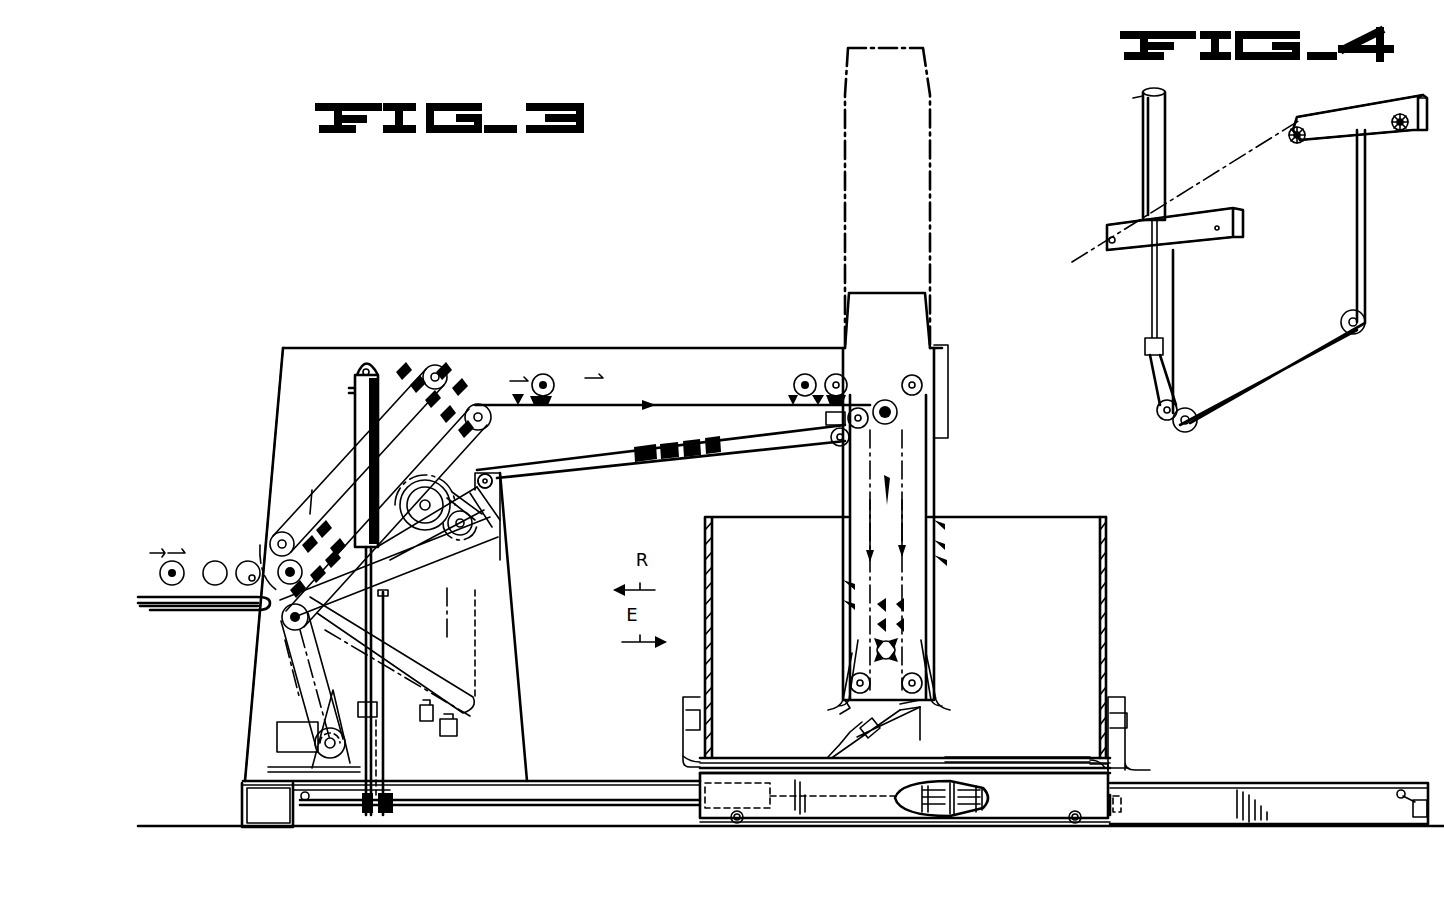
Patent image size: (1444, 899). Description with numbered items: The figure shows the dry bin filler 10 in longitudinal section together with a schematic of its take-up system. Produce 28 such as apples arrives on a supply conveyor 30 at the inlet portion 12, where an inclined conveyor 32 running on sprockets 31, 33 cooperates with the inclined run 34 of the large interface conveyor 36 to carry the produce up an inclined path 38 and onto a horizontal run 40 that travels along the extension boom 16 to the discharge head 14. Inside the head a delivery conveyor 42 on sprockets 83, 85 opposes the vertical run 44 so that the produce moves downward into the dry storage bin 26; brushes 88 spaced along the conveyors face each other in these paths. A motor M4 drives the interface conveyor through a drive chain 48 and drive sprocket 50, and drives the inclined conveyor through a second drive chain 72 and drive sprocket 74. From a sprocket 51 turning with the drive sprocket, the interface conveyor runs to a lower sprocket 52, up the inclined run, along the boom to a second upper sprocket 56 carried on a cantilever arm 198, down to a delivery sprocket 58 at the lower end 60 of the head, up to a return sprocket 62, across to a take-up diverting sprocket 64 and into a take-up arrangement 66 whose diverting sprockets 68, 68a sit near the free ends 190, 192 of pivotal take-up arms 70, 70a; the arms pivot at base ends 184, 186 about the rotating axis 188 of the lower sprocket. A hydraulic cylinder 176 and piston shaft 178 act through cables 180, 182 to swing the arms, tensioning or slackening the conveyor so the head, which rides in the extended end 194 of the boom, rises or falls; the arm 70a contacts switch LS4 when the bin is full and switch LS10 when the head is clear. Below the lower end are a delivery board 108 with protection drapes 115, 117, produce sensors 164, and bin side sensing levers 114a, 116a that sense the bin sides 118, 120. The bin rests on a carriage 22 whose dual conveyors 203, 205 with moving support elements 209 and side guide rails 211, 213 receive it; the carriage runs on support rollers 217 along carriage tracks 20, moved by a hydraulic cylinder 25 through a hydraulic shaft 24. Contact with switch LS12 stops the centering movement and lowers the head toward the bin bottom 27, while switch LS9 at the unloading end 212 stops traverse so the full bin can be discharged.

In FIG. 3, the dry bin filler 10 is at (680, 237).
In FIG. 3, the inlet portion 12 is at (282, 403).
In FIG. 3, the discharge head 14 is at (845, 128).
In FIG. 3, the extension boom 16 is at (684, 350).
In FIG. 3, the carriage tracks 20 is at (1268, 788).
In FIG. 3, the carriage 22 is at (1133, 701).
In FIG. 3, the hydraulic shaft 24 is at (992, 798).
In FIG. 3, the hydraulic cylinder 25 is at (553, 780).
In FIG. 3, the dry storage bin 26 is at (1110, 581).
In FIG. 3, the bottom of the bin 27 is at (993, 760).
In FIG. 3, the produce 28 is at (862, 410).
In FIG. 3, the supply conveyor 30 is at (138, 603).
In FIG. 3, the sprocket 31 is at (306, 510).
In FIG. 3, the inclined conveyor 32 is at (343, 450).
In FIG. 3, the sprocket 33 is at (455, 372).
In FIG. 3, the inclined run 34 is at (462, 445).
In FIG. 3, the interface conveyor 36 is at (598, 396).
In FIG. 3, the inclined path 38 is at (478, 398).
In FIG. 3, the horizontal run 40 is at (688, 404).
In FIG. 3, the delivery conveyor 42 is at (938, 487).
In FIG. 3, the vertical run 44 is at (868, 507).
In FIG. 3, the drive chain 48 is at (432, 576).
In FIG. 3, the drive sprocket 50 is at (430, 530).
In FIG. 3, the sprocket 51 is at (498, 507).
In FIG. 3, the lower sprocket 52 is at (335, 617).
In FIG. 4, the lower sprocket 52 is at (1290, 132).
In FIG. 3, the second upper sprocket 56 is at (855, 458).
In FIG. 3, the delivery sprocket 58 is at (850, 655).
In FIG. 3, the lower end of the discharge head 60 is at (845, 700).
In FIG. 3, the return sprocket 62 is at (825, 445).
In FIG. 3, the take-up diverting sprocket 64 is at (500, 487).
In FIG. 3, the take-up arrangement 66 is at (498, 537).
In FIG. 4, the take-up arrangement 66 is at (1337, 99).
In FIG. 3, the diverting sprocket 68 is at (488, 520).
In FIG. 4, the diverting sprocket 68 is at (1400, 132).
In FIG. 4, the companion diverting sprocket 68a is at (1245, 212).
In FIG. 3, the take-up arm 70 is at (445, 588).
In FIG. 4, the take-up arm 70 is at (1335, 135).
In FIG. 4, the take-up arm 70a is at (1215, 210).
In FIG. 3, the second drive chain 72 is at (305, 668).
In FIG. 3, the drive sprocket 74 is at (265, 540).
In FIG. 3, the sprocket 83 is at (930, 660).
In FIG. 3, the upper sprocket 85 is at (936, 403).
In FIG. 3, the brushes 88 is at (405, 378).
In FIG. 3, the delivery board 108 is at (855, 720).
In FIG. 3, the bin side sensing lever 114a is at (840, 680).
In FIG. 3, the protection drape 115 is at (830, 752).
In FIG. 3, the bin side sensing lever 116a is at (940, 680).
In FIG. 3, the protection drape 117 is at (922, 738).
In FIG. 3, the side of the bin 118 is at (705, 527).
In FIG. 3, the other side of the storage bin 120 is at (1107, 545).
In FIG. 3, the produce sensors 164 is at (920, 712).
In FIG. 3, the hydraulic cylinder 176 is at (355, 405).
In FIG. 4, the hydraulic cylinder 176 is at (1150, 127).
In FIG. 3, the piston shaft 178 is at (372, 625).
In FIG. 4, the piston shaft 178 is at (1152, 293).
In FIG. 3, the cable 180 is at (390, 795).
In FIG. 4, the cable 180 is at (1172, 372).
In FIG. 3, the cable 182 is at (372, 792).
In FIG. 4, the cable 182 is at (1175, 318).
In FIG. 4, the base end 184 is at (1292, 112).
In FIG. 4, the base end 186 is at (1114, 230).
In FIG. 4, the rotating axis 188 is at (1245, 158).
In FIG. 4, the free end 190 is at (1425, 92).
In FIG. 4, the free end 192 is at (1233, 237).
In FIG. 3, the extended end of the boom 194 is at (948, 360).
In FIG. 3, the cantilever arm 198 is at (826, 420).
In FIG. 3, the dual conveyor 203 is at (700, 772).
In FIG. 3, the dual conveyor 205 is at (1128, 770).
In FIG. 3, the moving support elements 209 is at (690, 760).
In FIG. 3, the side guide rail 211 is at (688, 712).
In FIG. 3, the unloading end 212 is at (1338, 785).
In FIG. 3, the side guide rail 213 is at (1130, 722).
In FIG. 3, the support rollers 217 is at (736, 823).
In FIG. 3, the motor M4 is at (277, 740).
In FIG. 3, the switch LS4 is at (418, 720).
In FIG. 3, the switch LS9 is at (1412, 810).
In FIG. 3, the switch LS10 is at (460, 732).
In FIG. 3, the double pole switch LS12 is at (1125, 805).